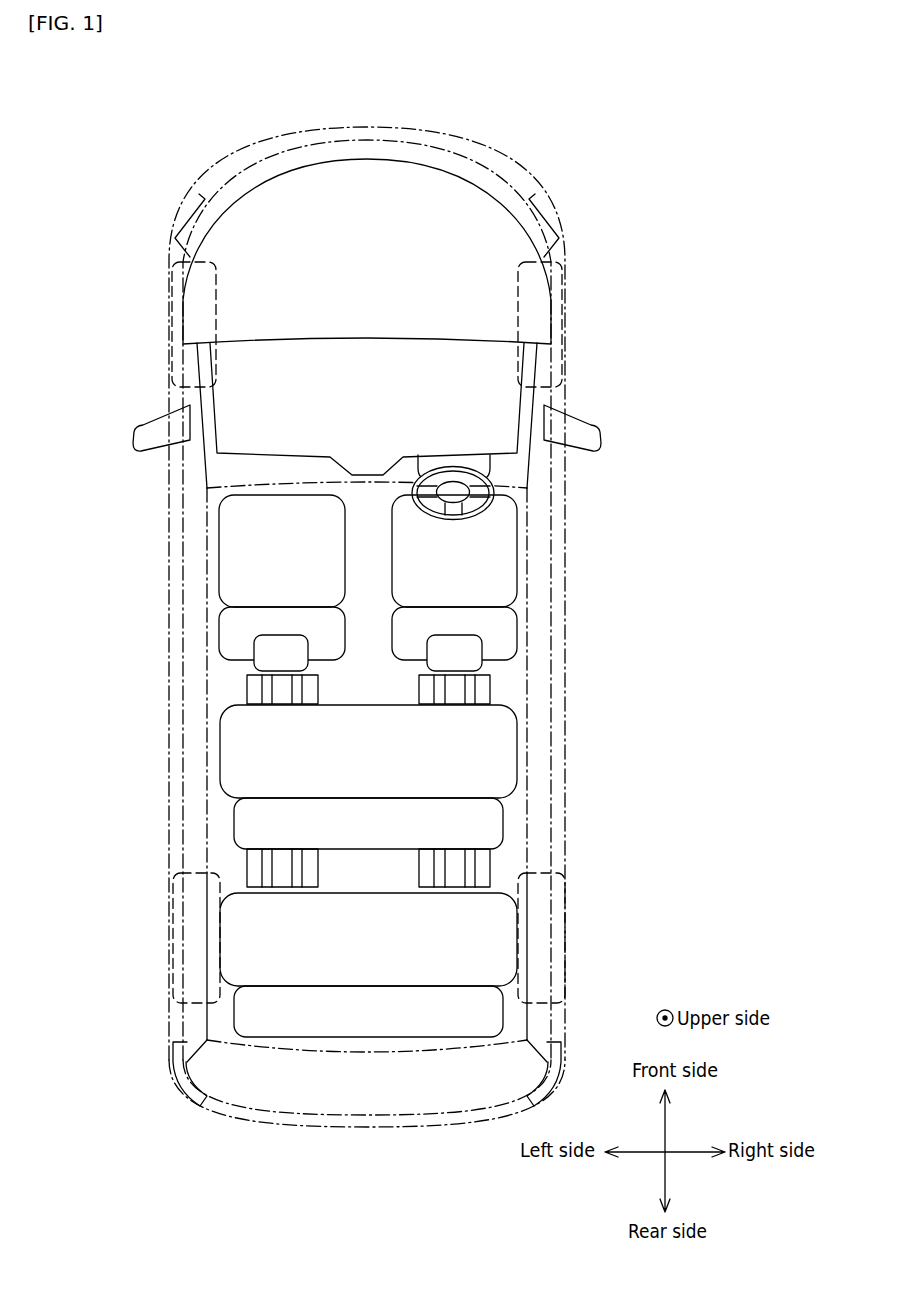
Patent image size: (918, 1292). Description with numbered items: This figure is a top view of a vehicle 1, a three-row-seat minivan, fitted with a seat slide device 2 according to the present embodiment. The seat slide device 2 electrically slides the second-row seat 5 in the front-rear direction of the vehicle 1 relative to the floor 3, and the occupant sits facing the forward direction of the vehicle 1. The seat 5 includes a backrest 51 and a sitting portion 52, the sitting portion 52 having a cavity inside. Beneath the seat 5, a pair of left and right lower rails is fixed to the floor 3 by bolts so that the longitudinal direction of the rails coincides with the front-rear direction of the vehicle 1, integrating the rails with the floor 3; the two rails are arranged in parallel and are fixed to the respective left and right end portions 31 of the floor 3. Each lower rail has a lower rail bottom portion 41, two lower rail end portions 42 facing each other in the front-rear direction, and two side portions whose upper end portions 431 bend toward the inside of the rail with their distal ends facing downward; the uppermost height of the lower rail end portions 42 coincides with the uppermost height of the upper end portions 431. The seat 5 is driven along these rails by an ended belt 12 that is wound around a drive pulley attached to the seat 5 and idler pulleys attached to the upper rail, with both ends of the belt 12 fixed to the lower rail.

The vehicle 1 is at (640, 112).
The seat slide device 2 is at (549, 740).
The floor 3 is at (512, 687).
The left and right end portions of the floor 31 is at (212, 509).
The ended belt 12 is at (455, 688).
The lower rail bottom portion 41 is at (267, 690).
The lower rail end portions 42 is at (265, 674).
The upper end portions of the lower rail side portions 431 is at (308, 698).
The second-row seat 5 is at (438, 782).
The backrest 51 is at (493, 822).
The sitting portion 52 is at (507, 755).